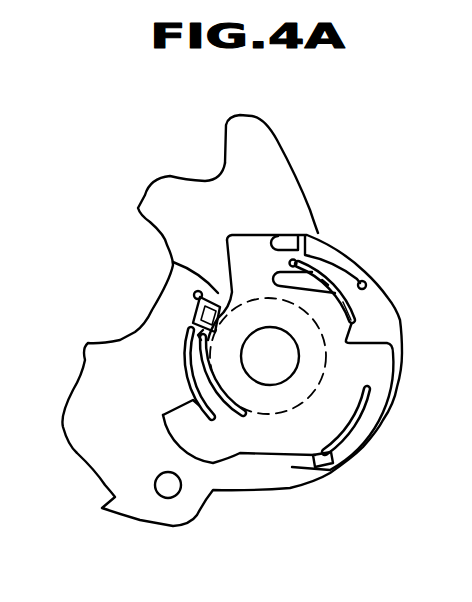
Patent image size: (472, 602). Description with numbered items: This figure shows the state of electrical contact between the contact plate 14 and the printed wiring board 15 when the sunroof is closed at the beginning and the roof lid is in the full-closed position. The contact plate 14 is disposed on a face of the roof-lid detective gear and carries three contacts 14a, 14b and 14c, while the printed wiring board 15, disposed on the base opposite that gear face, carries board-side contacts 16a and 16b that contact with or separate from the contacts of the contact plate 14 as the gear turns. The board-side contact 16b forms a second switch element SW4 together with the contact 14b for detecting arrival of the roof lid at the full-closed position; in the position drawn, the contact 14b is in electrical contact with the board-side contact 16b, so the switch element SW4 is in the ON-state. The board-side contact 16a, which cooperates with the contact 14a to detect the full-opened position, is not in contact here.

The contact plate 14 is at (363, 370).
The contact 14a is at (293, 467).
The contact 14b is at (192, 326).
The contact 14c is at (355, 312).
The printed wiring board 15 is at (100, 405).
The board-side contact 16a is at (342, 252).
The board-side contact 16b is at (171, 261).
The second switch element SW4 is at (196, 307).